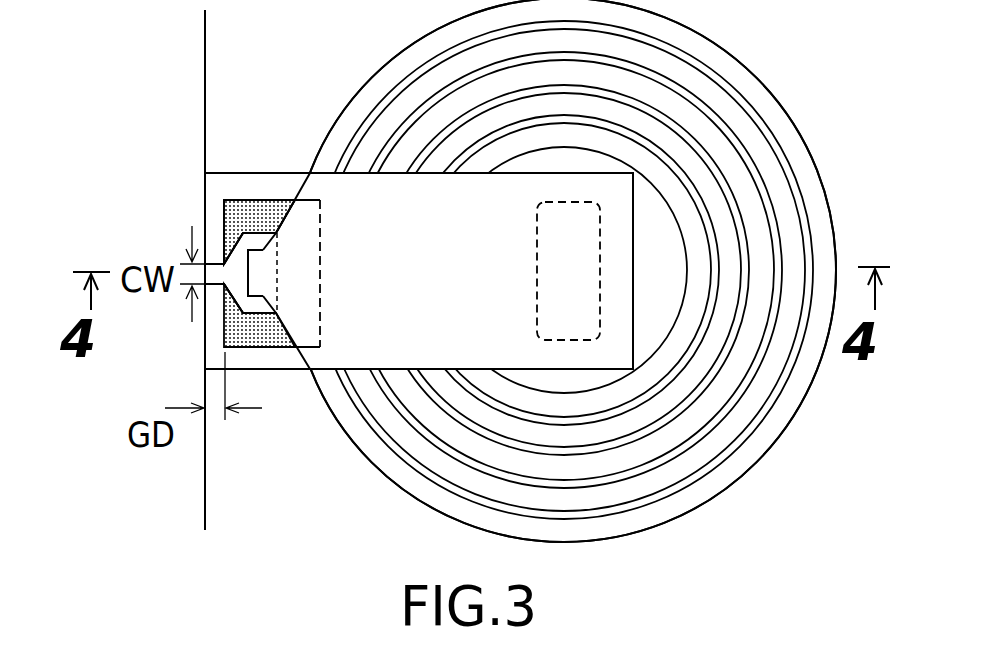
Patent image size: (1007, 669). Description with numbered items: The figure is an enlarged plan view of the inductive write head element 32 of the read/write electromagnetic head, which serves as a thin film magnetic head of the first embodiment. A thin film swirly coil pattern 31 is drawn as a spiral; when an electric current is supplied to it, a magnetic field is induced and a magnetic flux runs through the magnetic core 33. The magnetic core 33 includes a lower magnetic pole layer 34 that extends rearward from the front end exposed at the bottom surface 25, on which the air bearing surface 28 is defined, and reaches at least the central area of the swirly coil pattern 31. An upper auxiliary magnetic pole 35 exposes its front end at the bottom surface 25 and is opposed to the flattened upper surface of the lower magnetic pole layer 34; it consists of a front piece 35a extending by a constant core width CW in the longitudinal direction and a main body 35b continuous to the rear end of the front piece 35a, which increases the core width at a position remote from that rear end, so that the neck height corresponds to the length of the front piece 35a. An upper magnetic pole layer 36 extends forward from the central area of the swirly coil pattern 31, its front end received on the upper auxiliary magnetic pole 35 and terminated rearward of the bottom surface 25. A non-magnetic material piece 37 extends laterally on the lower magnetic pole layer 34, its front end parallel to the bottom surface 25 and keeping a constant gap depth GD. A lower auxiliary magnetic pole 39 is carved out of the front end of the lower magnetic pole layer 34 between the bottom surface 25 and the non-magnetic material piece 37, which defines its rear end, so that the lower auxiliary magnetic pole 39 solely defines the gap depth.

The bottom surface 25 is at (205, 33).
The air bearing surface 28 is at (205, 92).
The swirly coil pattern 31 is at (782, 107).
The inductive write head element 32 is at (782, 465).
The magnetic core 33 is at (290, 385).
The lower magnetic pole layer 34 is at (218, 173).
The upper auxiliary magnetic pole 35 is at (118, 147).
The front piece 35a is at (212, 257).
The main body 35b is at (222, 208).
The upper magnetic pole layer 36 is at (305, 173).
The non-magnetic material piece 37 is at (255, 200).
The lower auxiliary magnetic pole 39 is at (212, 333).